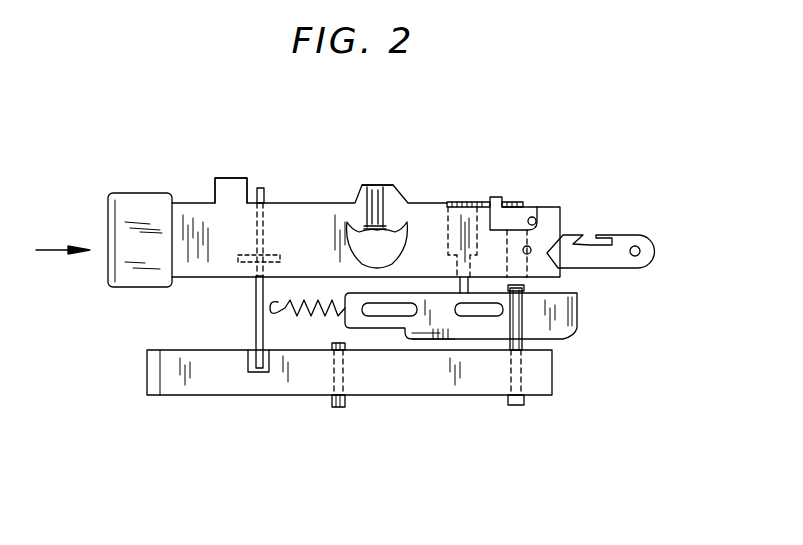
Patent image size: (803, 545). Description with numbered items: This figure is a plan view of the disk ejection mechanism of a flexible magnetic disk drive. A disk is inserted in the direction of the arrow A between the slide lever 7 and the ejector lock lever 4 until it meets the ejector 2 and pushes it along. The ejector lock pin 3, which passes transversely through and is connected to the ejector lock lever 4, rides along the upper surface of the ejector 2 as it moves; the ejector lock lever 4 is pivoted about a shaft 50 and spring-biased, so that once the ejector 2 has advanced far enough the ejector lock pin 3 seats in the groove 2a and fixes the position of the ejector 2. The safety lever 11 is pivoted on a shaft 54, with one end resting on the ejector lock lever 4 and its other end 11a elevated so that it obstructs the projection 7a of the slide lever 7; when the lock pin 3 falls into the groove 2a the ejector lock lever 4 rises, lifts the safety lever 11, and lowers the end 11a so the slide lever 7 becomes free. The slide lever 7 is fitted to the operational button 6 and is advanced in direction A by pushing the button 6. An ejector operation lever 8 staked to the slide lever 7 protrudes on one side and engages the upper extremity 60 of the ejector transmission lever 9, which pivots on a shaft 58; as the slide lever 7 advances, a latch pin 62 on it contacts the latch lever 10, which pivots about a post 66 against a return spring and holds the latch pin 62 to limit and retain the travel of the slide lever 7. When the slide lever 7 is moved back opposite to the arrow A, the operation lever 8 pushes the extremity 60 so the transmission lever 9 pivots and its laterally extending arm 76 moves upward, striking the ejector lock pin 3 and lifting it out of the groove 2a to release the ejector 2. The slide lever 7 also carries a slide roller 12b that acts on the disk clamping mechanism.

The ejector 2 is at (577, 323).
The groove of the ejector 2a is at (443, 343).
The ejector lock pin 3 is at (517, 405).
The ejector lock lever 4 is at (305, 382).
The operational button 6 is at (125, 200).
The slide lever 7 is at (308, 215).
The projection on the slide lever 7a is at (225, 180).
The ejector operation lever 8 is at (496, 197).
The ejector transmission lever 9 is at (472, 200).
The latch lever 10 is at (620, 238).
The safety lever 11 is at (256, 322).
The end of the safety lever 11a is at (265, 185).
The slide roller 12b is at (385, 208).
The shaft 50 is at (348, 402).
The shaft 54 is at (280, 262).
The shaft 58 is at (452, 282).
The upper extremity of the ejector transmission lever 60 is at (531, 216).
The latch pin 62 is at (531, 246).
The post 66 is at (640, 251).
The laterally extending arm 76 is at (537, 286).
The direction of disk insertion A is at (52, 251).